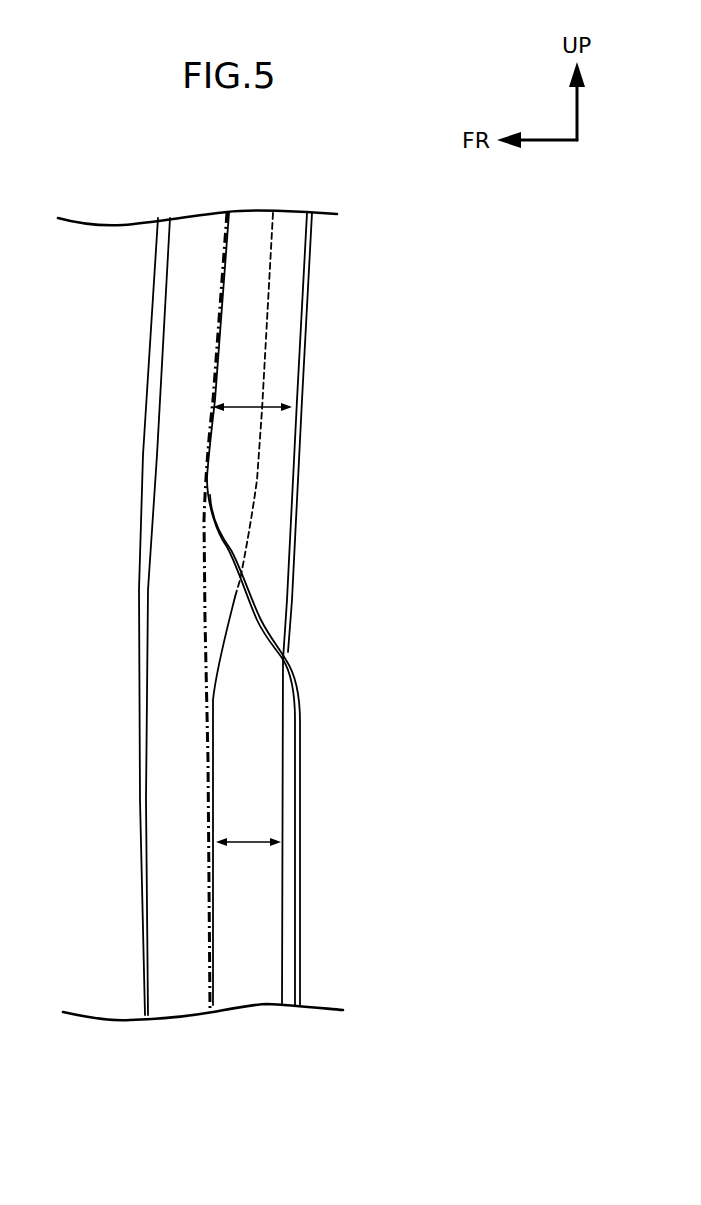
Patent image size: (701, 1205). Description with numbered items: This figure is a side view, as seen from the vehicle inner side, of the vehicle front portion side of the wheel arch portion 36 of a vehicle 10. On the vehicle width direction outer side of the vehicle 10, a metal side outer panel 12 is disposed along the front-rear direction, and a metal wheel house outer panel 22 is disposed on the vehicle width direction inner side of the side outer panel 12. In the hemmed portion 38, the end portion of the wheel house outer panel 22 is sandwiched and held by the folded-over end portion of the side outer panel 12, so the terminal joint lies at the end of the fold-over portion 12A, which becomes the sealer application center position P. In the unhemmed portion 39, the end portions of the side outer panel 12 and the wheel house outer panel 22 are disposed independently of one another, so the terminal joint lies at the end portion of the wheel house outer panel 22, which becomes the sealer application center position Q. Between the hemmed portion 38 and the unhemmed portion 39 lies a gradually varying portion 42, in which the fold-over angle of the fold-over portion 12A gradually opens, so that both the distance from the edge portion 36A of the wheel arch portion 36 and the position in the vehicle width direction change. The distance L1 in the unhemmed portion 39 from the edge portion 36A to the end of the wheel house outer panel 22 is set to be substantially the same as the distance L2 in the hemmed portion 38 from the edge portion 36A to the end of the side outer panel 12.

The vehicle 10 is at (476, 335).
The side outer panel 12 is at (331, 609).
The fold-over portion 12A is at (238, 477).
The wheel house outer panel 22 is at (163, 758).
The wheel arch portion 36 is at (175, 609).
The edge portion 36A is at (304, 269).
The hemmed portion 38 is at (326, 383).
The unhemmed portion 39 is at (339, 790).
The gradually varying portion 42 is at (253, 617).
The sealer application center position P is at (213, 363).
The sealer application center position Q is at (213, 917).
The distance L1 is at (253, 845).
The distance L2 is at (252, 410).